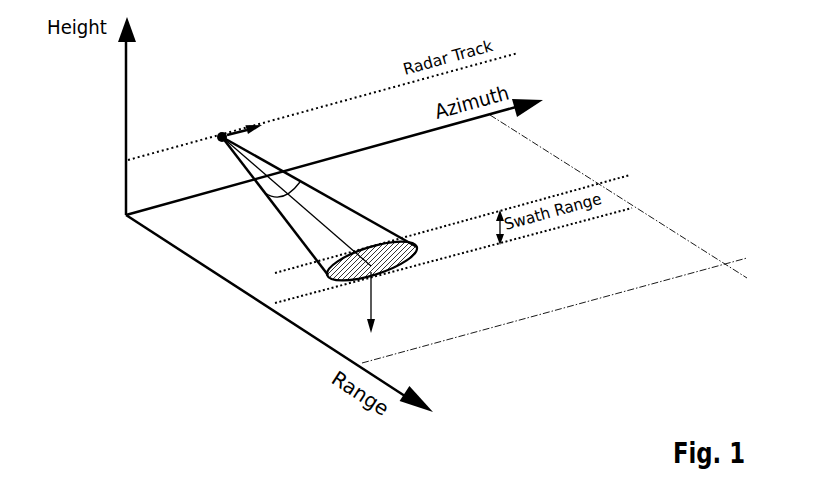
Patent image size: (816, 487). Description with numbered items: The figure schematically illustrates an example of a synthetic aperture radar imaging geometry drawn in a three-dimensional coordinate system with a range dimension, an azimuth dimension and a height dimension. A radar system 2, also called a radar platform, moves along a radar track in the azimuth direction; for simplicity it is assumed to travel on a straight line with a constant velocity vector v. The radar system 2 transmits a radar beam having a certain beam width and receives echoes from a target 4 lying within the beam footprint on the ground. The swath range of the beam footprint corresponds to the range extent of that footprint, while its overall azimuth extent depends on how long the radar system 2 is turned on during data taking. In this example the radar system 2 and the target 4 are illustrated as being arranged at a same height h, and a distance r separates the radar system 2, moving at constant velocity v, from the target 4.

The radar system 2 is at (222, 131).
The target 4 is at (371, 262).
The velocity vector v is at (244, 121).
The distance r is at (296, 201).
The height h is at (365, 302).